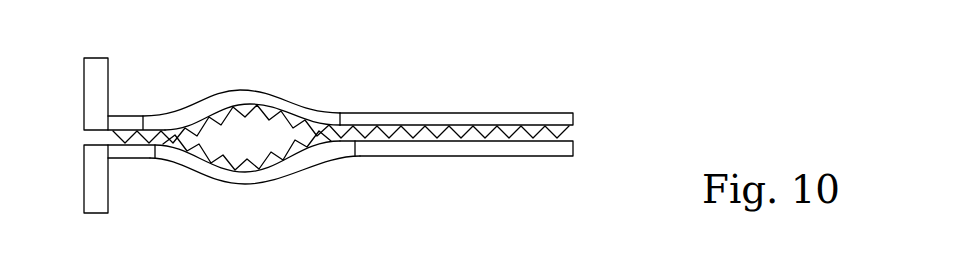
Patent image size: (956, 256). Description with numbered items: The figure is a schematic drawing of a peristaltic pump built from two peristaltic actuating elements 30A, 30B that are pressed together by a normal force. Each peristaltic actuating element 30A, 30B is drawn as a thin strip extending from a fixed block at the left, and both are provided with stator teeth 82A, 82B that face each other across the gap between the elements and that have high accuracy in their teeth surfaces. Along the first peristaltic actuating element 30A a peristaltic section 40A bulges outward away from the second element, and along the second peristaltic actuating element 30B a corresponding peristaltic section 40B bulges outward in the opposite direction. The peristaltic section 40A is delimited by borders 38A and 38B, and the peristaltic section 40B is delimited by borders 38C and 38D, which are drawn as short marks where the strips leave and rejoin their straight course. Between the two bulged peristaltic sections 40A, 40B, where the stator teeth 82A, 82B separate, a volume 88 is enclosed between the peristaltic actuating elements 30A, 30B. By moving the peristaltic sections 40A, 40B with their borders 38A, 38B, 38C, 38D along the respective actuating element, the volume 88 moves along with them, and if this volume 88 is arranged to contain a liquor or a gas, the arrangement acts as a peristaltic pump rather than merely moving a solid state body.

The peristaltic actuating element 30A is at (528, 117).
The peristaltic actuating element 30B is at (543, 150).
The border 38A is at (141, 115).
The border 38B is at (343, 110).
The border 38C is at (155, 158).
The border 38D is at (355, 156).
The peristaltic section 40A is at (242, 95).
The peristaltic section 40B is at (222, 172).
The stator teeth 82A is at (468, 132).
The stator teeth 82B is at (480, 138).
The volume 88 is at (282, 137).